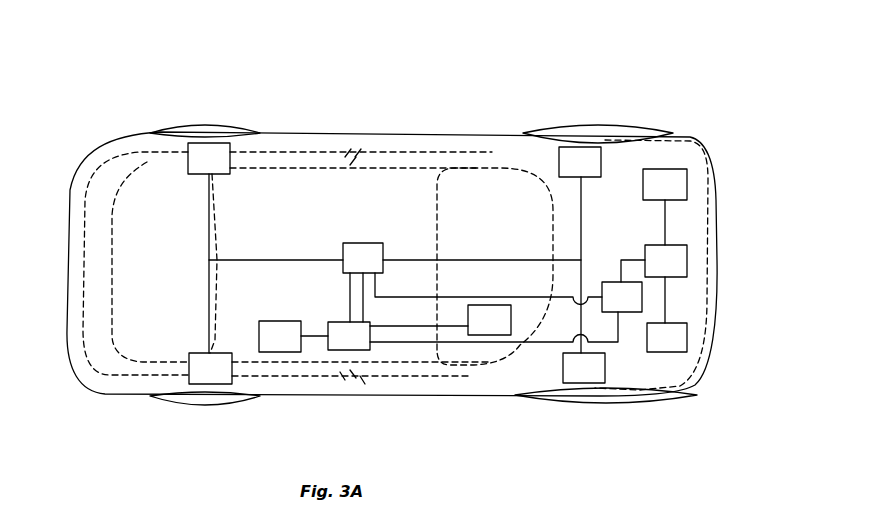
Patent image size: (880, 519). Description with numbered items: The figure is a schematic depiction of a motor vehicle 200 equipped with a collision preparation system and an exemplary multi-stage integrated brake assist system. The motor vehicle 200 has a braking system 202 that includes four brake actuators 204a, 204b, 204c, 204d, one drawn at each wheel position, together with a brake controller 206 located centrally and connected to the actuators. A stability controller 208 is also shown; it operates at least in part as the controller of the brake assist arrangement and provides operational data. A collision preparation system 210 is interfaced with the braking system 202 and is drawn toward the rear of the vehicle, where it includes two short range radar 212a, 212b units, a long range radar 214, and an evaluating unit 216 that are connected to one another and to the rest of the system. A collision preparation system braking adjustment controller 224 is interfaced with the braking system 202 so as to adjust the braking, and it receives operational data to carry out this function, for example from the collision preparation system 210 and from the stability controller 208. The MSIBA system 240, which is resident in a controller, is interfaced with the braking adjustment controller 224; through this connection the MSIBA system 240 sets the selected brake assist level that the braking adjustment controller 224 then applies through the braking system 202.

The motor vehicle 200 is at (170, 442).
The braking system 202 is at (374, 220).
The brake actuator 204a is at (585, 383).
The brake actuator 204b is at (588, 147).
The brake actuator 204c is at (207, 143).
The brake actuator 204d is at (207, 384).
The brake controller 206 is at (345, 243).
The stability controller 208 is at (500, 335).
The collision preparation system 210 is at (655, 372).
The short range radar 212a is at (678, 352).
The short range radar 212b is at (677, 200).
The long range radar 214 is at (658, 245).
The evaluating unit 216 is at (628, 313).
The collision preparation system braking adjustment controller 224 is at (348, 350).
The MSIBA system 240 is at (290, 321).